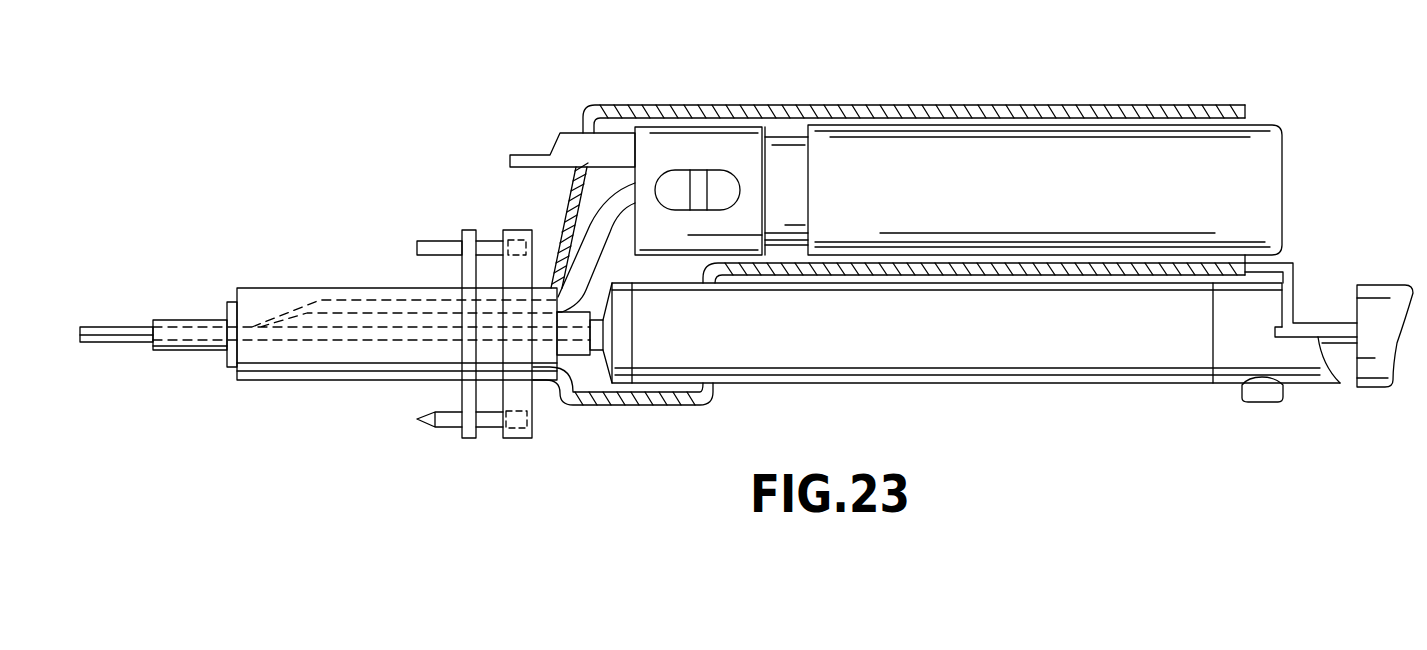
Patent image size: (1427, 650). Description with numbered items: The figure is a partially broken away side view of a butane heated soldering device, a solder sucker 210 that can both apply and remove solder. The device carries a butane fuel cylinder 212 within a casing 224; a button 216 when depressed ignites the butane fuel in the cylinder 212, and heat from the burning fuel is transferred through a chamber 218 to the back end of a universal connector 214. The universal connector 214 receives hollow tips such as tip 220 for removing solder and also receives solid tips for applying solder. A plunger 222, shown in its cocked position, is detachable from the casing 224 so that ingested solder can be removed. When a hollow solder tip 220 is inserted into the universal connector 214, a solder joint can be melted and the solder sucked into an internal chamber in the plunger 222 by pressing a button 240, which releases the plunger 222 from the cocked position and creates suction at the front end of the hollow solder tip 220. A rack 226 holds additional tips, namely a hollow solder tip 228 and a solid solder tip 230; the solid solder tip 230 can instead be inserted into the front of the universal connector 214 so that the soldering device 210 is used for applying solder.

The solder sucker 210 is at (405, 156).
The butane fuel cylinder 212 is at (1282, 173).
The universal connector 214 is at (193, 318).
The button 216 is at (557, 140).
The chamber 218 is at (600, 223).
The hollow solder tip 220 is at (112, 327).
The plunger 222 is at (995, 385).
The casing 224 is at (922, 105).
The rack 226 is at (497, 451).
The hollow solder tip 228 is at (443, 240).
The solid solder tip 230 is at (445, 428).
The button 240 is at (1263, 402).